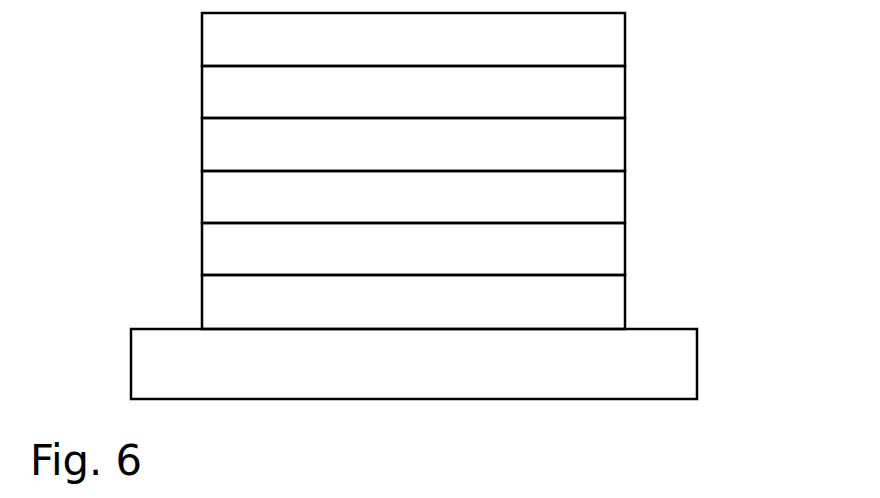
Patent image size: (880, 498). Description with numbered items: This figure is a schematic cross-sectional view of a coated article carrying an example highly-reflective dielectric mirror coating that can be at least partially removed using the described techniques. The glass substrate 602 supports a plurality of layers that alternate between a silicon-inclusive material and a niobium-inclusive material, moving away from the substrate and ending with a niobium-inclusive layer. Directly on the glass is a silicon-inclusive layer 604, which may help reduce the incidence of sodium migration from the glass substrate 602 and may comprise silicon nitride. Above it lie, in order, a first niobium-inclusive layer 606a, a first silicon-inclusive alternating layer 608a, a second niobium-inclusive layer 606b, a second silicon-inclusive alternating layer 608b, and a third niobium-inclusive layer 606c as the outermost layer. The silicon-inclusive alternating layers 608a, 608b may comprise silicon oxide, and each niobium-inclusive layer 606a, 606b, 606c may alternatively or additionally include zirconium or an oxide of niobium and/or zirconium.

The glass substrate 602 is at (697, 364).
The silicon-inclusive layer 604 is at (625, 302).
The first niobium-inclusive layer 606a is at (625, 250).
The first silicon-inclusive alternating layer 608a is at (625, 198).
The second niobium-inclusive layer 606b is at (625, 145).
The second silicon-inclusive alternating layer 608b is at (625, 93).
The third niobium-inclusive layer 606c is at (625, 40).